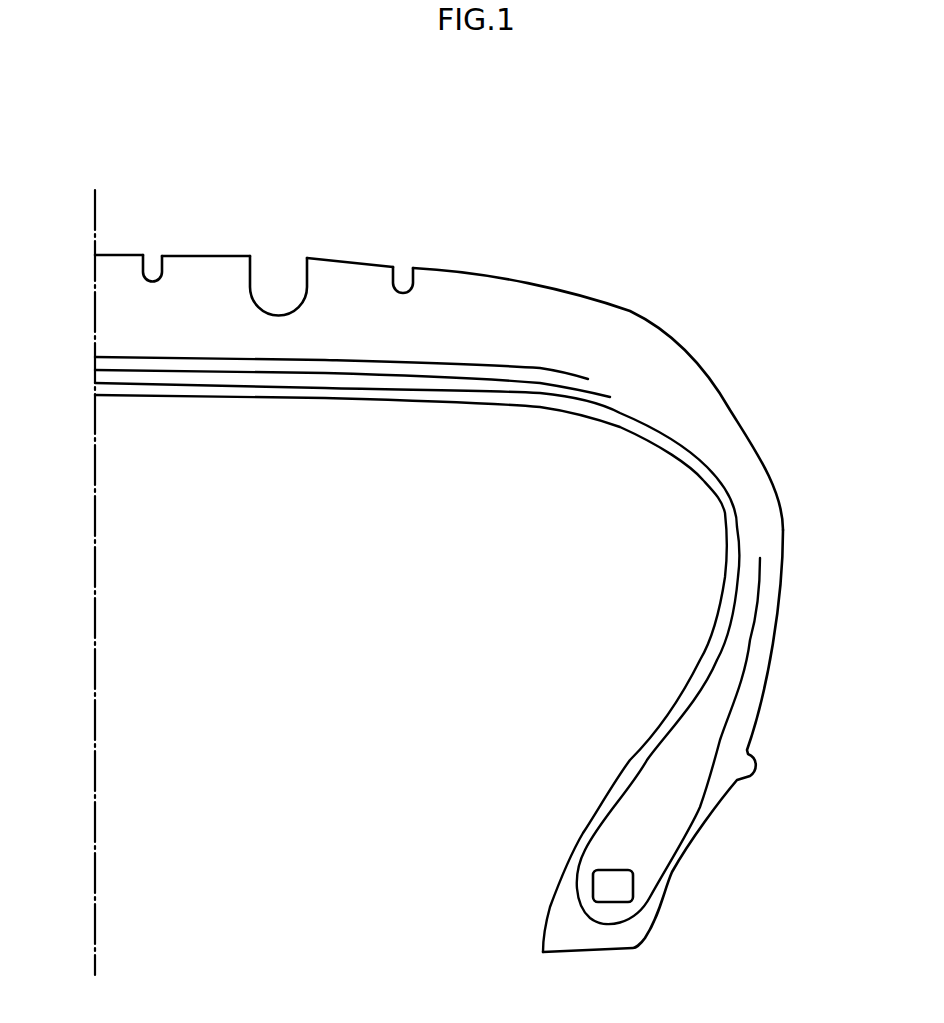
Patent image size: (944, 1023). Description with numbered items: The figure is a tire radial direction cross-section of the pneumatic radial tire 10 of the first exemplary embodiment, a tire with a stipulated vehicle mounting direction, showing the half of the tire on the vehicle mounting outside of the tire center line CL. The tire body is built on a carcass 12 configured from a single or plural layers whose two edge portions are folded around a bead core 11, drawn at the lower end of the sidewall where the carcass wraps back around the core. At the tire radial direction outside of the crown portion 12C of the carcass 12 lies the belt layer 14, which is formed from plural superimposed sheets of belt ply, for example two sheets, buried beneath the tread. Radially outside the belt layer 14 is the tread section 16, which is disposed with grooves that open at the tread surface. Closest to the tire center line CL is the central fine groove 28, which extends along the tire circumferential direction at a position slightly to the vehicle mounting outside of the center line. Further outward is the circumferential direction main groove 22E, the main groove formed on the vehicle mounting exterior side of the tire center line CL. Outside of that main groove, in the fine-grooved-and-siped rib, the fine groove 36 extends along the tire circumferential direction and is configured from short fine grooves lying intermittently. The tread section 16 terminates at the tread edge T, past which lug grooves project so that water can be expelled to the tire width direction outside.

The pneumatic radial tire 10 is at (769, 165).
The bead core 11 is at (603, 885).
The carcass 12 is at (733, 510).
The crown portion 12C is at (130, 383).
The belt layer 14 is at (618, 382).
The tread section 16 is at (512, 147).
The circumferential direction main groove 22E is at (303, 280).
The central fine groove 28 is at (153, 262).
The fine groove 36 is at (408, 273).
The tread edge T is at (628, 310).
The tire center line CL is at (93, 203).